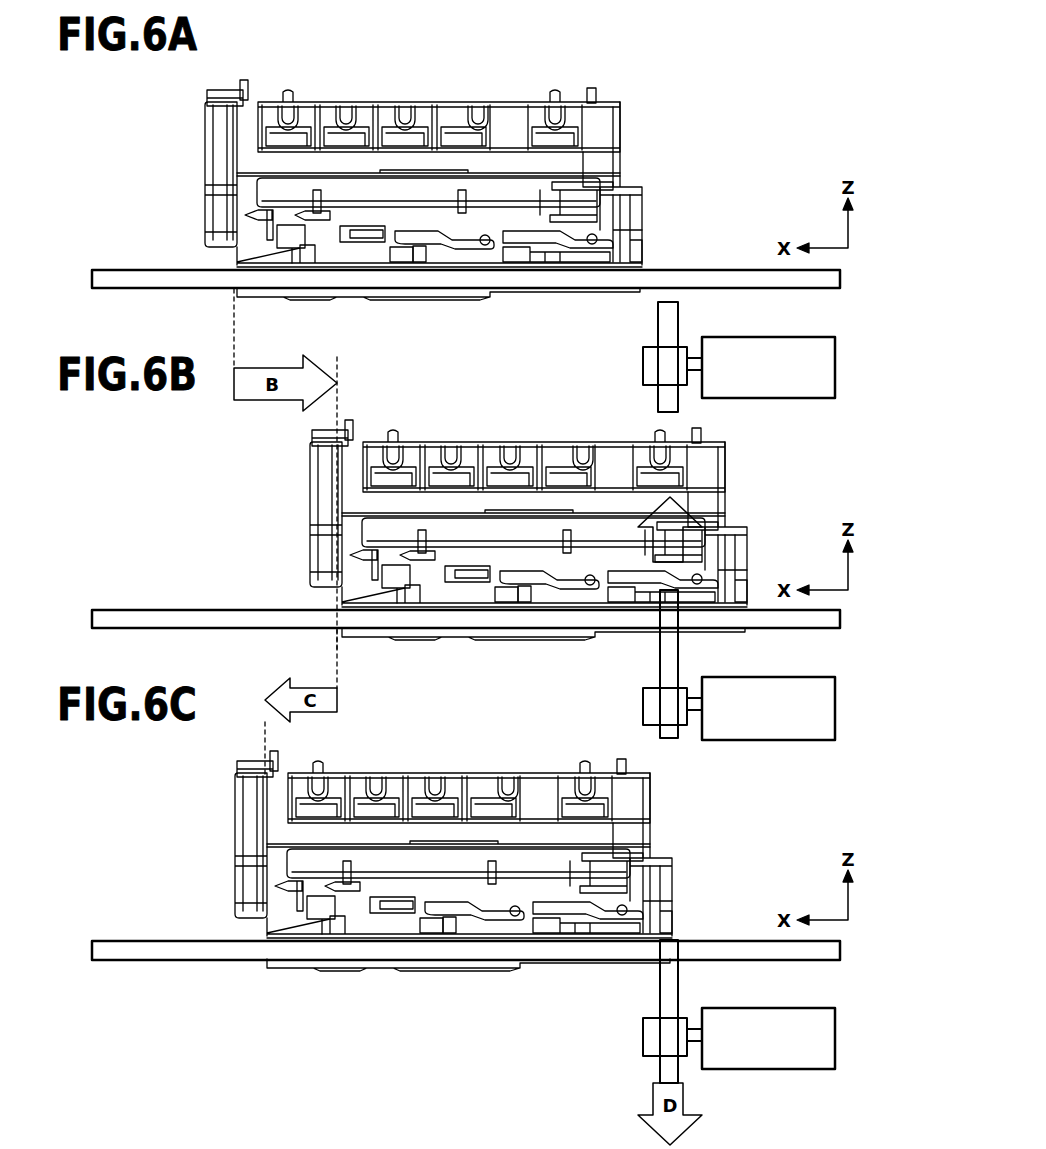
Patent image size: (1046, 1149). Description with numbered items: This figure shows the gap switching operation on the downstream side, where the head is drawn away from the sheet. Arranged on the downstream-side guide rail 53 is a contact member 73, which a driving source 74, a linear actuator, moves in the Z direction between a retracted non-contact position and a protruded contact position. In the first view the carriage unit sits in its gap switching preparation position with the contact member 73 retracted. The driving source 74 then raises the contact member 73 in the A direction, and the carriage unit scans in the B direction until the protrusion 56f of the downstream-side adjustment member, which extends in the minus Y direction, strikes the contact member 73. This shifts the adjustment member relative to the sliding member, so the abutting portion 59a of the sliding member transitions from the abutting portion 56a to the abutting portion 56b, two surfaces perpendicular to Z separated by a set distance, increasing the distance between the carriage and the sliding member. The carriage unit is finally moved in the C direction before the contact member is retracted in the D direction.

In FIG. 6A, the downstream-side guide rail 53 is at (146, 276).
In FIG. 6B, the downstream-side guide rail 53 is at (146, 616).
In FIG. 6C, the downstream-side guide rail 53 is at (146, 947).
In FIG. 6A, the abutting portion 56a is at (587, 237).
In FIG. 6B, the abutting portion 56a is at (513, 587).
In FIG. 6C, the abutting portion 56a is at (440, 928).
In FIG. 6A, the abutting portion 56b is at (420, 247).
In FIG. 6B, the abutting portion 56b is at (572, 573).
In FIG. 6C, the abutting portion 56b is at (497, 904).
In FIG. 6A, the protrusion 56f is at (641, 256).
In FIG. 6B, the protrusion 56f is at (720, 577).
In FIG. 6C, the protrusion 56f is at (672, 896).
In FIG. 6A, the abutting portion 59a is at (412, 256).
In FIG. 6B, the abutting portion 59a is at (515, 596).
In FIG. 6C, the abutting portion 59a is at (440, 930).
In FIG. 6A, the contact member 73 is at (665, 321).
In FIG. 6B, the contact member 73 is at (665, 662).
In FIG. 6C, the contact member 73 is at (665, 990).
In FIG. 6A, the driving source 74 is at (823, 368).
In FIG. 6B, the driving source 74 is at (823, 708).
In FIG. 6C, the driving source 74 is at (823, 1039).